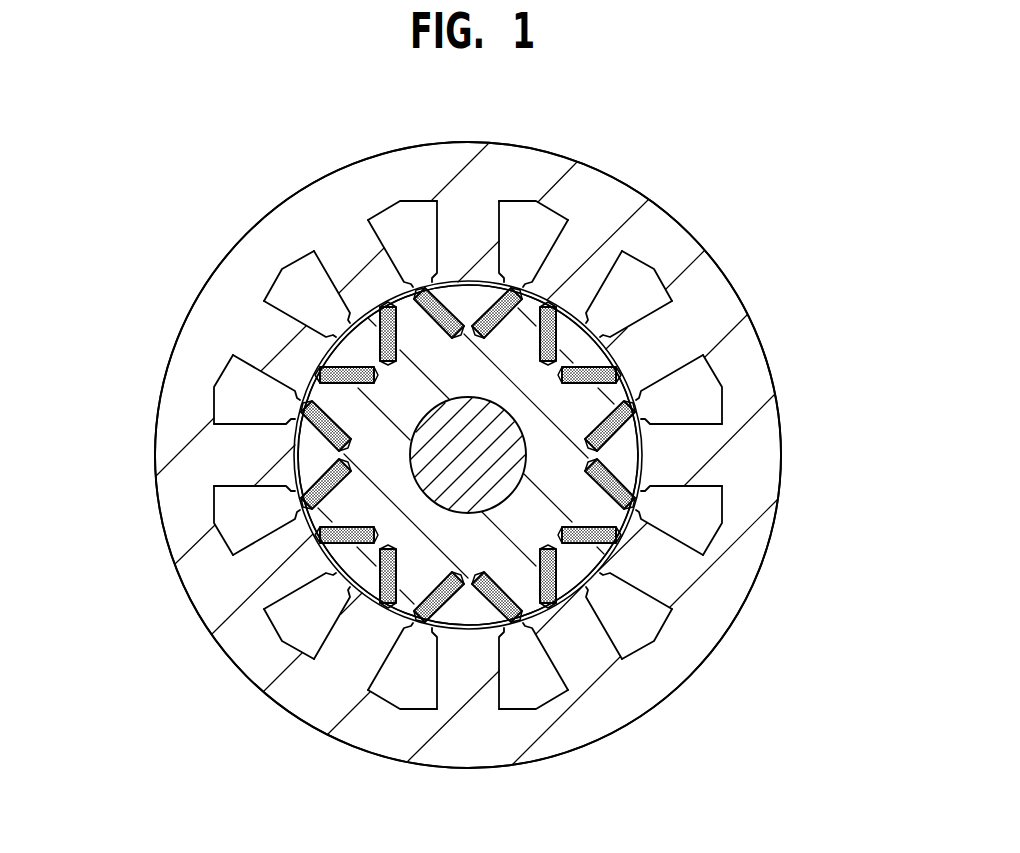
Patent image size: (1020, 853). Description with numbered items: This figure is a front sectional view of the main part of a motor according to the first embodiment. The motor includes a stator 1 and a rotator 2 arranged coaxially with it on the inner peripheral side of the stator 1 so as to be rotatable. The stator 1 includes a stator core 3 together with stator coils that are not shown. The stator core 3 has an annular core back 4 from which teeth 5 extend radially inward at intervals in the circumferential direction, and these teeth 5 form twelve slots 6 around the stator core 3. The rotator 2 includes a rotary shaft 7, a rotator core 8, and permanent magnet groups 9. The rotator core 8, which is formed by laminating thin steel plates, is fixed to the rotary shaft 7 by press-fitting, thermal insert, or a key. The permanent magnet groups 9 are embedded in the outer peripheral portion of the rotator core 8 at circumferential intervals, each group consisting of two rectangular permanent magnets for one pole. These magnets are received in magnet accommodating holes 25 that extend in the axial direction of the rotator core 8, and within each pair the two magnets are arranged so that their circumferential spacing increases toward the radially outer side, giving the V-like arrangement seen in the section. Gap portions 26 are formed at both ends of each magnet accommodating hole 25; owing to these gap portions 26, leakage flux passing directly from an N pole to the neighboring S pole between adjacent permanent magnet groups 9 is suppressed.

The stator 1 is at (652, 202).
The rotator 2 is at (297, 397).
The stator core 3 is at (708, 302).
The core back 4 is at (668, 658).
The teeth 5 is at (260, 448).
The slots 6 is at (412, 224).
The rotary shaft 7 is at (413, 483).
The rotator core 8 is at (355, 565).
The permanent magnet groups 9 is at (525, 346).
The magnet accommodating holes 25 is at (567, 290).
The gap portions 26 is at (337, 335).